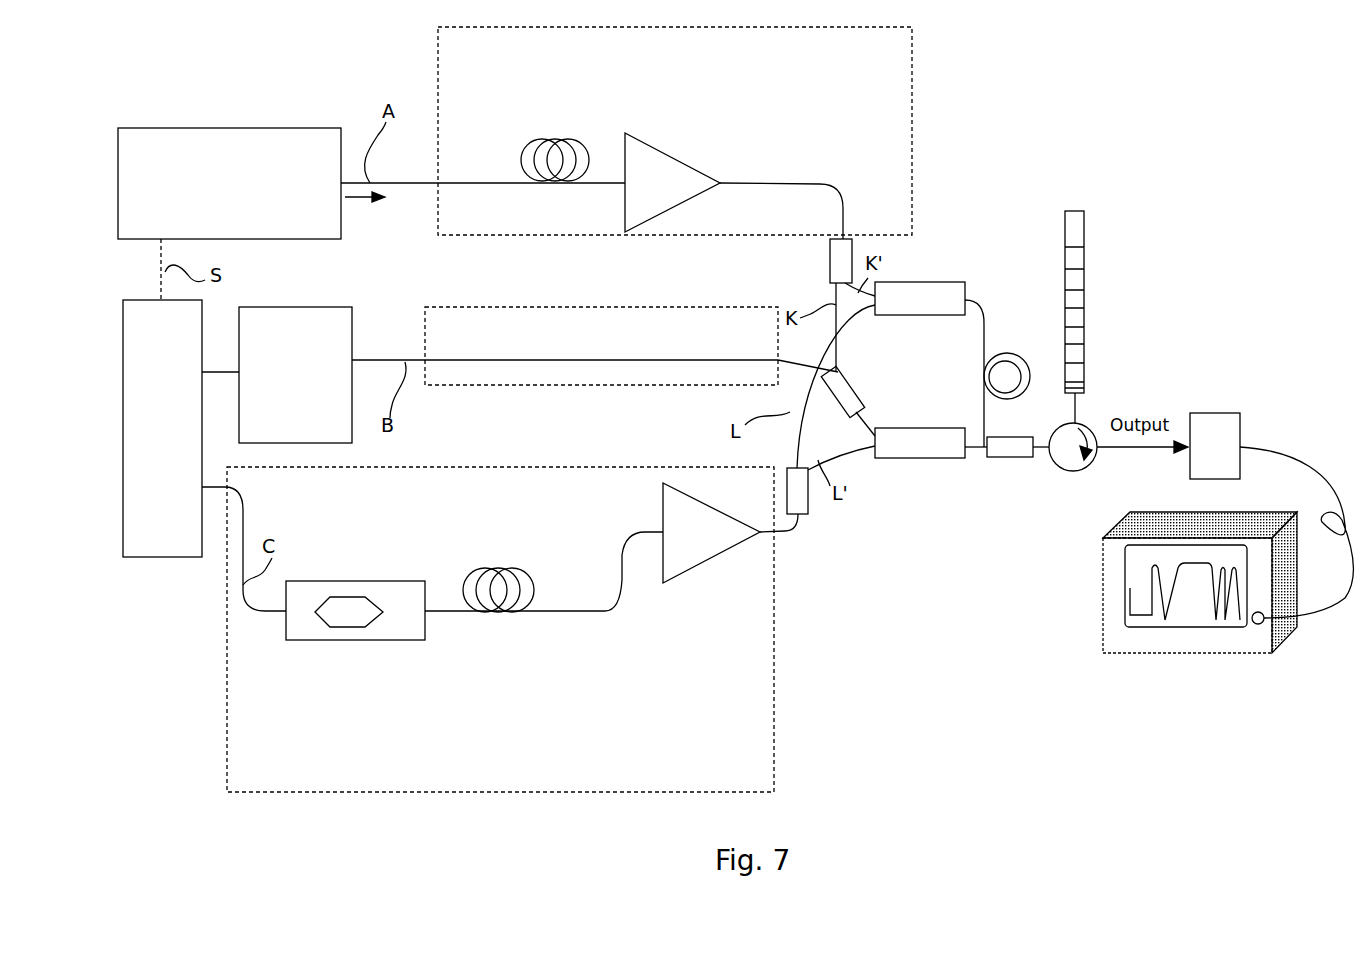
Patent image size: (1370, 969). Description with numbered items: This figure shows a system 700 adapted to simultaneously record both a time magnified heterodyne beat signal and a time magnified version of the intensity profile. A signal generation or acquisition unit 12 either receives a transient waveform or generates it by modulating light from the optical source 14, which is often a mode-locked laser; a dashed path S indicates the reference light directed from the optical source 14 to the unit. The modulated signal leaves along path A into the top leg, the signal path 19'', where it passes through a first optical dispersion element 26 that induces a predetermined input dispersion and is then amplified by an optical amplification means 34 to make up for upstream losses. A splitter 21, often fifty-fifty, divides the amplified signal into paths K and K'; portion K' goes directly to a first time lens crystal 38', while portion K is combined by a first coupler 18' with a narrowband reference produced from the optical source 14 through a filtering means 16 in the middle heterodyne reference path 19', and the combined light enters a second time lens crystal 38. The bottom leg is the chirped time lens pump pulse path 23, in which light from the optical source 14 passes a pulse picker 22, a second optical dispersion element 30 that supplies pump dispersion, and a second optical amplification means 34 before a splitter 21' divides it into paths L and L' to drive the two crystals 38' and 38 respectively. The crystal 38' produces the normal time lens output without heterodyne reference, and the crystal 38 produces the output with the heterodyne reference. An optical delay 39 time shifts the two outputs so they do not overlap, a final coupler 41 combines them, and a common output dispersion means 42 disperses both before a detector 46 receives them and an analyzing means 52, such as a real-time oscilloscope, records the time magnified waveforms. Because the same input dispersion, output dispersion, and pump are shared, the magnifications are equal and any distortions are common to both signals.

The system 700 is at (252, 48).
The signal generation or acquisition unit 12 is at (305, 128).
The optical source 14 is at (140, 557).
The filtering means 16 is at (352, 322).
The first coupler 18' is at (832, 406).
The heterodyne reference path 19' is at (601, 378).
The signal path 19'' is at (785, 131).
The splitter 21 is at (817, 265).
The splitter 21' is at (833, 527).
The pulse picker 22 is at (395, 640).
The chirped time lens pump pulse path 23 is at (774, 677).
The first optical dispersion element 26 is at (580, 140).
The second optical dispersion element 30 is at (535, 612).
The optical amplification means 34 is at (650, 143).
The second time lens crystal 38 is at (917, 428).
The first time lens crystal 38' is at (923, 272).
The optical delay 39 is at (1022, 352).
The final coupler 41 is at (1000, 458).
The output dispersion means 42 is at (1084, 255).
The detector 46 is at (1215, 413).
The analyzing means 52 is at (1103, 598).